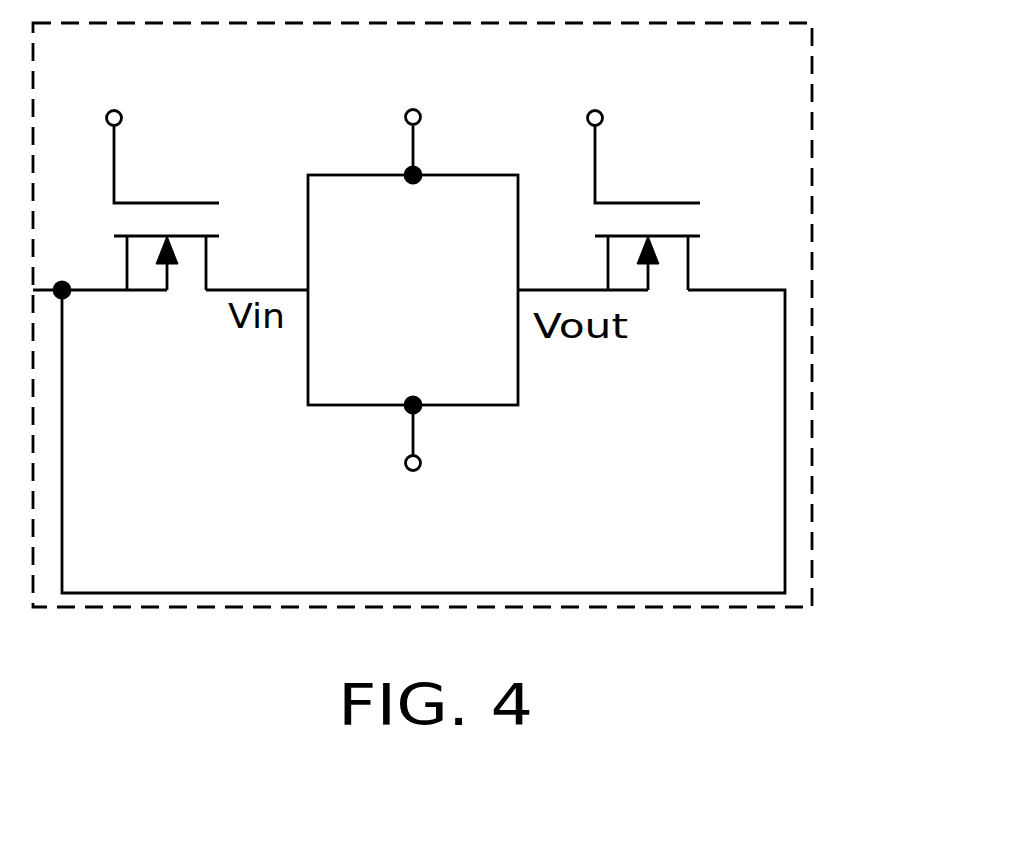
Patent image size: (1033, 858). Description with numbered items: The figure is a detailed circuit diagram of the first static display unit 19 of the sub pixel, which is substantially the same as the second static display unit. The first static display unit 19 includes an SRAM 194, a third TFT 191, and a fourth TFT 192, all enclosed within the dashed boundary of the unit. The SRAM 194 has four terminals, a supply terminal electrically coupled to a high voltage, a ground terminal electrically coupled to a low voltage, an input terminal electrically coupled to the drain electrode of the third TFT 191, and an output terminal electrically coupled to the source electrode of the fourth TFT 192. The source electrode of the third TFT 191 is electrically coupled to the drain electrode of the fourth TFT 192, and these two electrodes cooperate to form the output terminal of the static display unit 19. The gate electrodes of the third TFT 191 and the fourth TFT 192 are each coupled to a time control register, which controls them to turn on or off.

The first static display unit 19 is at (811, 70).
The third TFT 191 is at (222, 217).
The fourth TFT 192 is at (707, 218).
The SRAM 194 is at (480, 405).